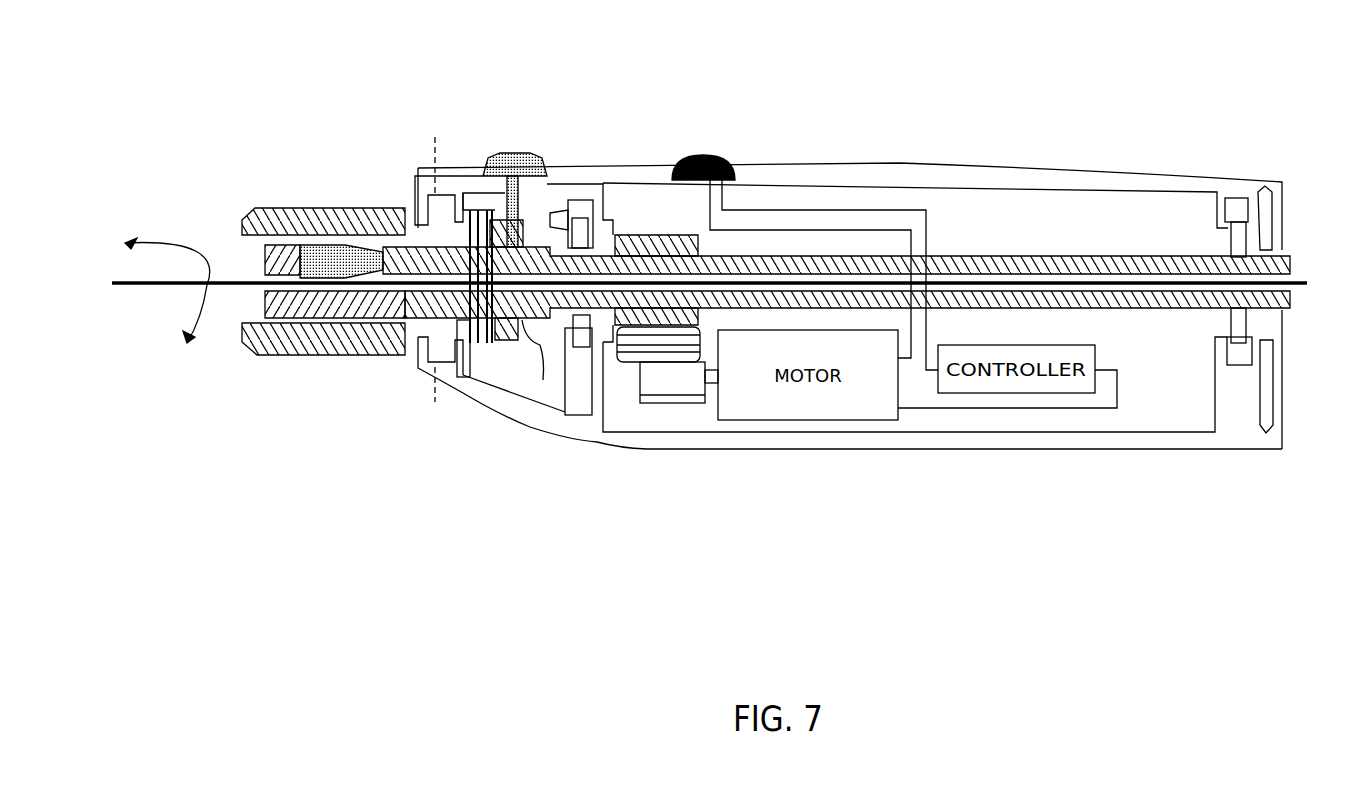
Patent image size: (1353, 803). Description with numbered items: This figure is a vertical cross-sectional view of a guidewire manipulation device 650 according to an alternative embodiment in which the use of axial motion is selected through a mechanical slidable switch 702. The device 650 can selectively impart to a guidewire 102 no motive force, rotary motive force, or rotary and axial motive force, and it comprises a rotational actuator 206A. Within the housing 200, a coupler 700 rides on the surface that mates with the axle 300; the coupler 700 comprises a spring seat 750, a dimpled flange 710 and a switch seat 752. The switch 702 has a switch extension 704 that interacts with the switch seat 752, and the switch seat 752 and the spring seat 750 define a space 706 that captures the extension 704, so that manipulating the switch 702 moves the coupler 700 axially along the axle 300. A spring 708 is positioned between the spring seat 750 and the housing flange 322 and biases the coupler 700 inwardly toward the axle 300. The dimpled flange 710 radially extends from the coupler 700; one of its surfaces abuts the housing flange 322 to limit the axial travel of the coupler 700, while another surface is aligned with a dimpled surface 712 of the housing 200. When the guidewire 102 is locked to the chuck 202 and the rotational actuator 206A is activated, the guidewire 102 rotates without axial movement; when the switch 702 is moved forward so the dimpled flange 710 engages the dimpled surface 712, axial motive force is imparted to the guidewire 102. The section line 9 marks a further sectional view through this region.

The guidewire 102 is at (1300, 280).
The housing 200 is at (983, 168).
The chuck 202 is at (292, 373).
The rotational actuator 206A is at (755, 465).
The axle 300 is at (1020, 255).
The housing flange 322 is at (458, 217).
The guidewire manipulation device 650 is at (905, 100).
The coupler 700 is at (533, 237).
The slidable switch 702 is at (513, 157).
The switch extension 704 is at (462, 215).
The space 706 is at (513, 230).
The spring 708 is at (480, 345).
The dimpled flange 710 is at (457, 340).
The dimpled surface 712 is at (410, 208).
The spring seat 750 is at (507, 358).
The switch seat 752 is at (533, 340).
The section line 9 is at (435, 137).